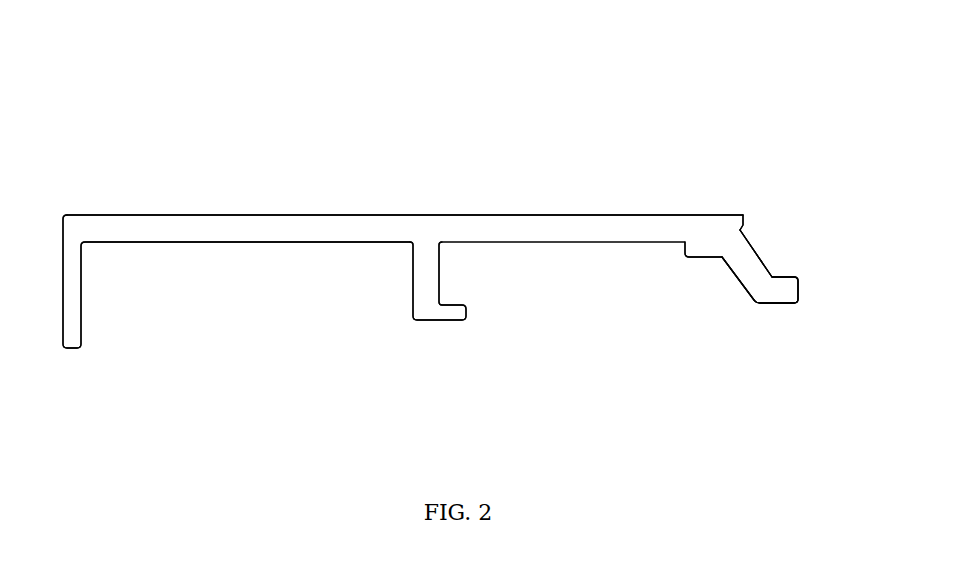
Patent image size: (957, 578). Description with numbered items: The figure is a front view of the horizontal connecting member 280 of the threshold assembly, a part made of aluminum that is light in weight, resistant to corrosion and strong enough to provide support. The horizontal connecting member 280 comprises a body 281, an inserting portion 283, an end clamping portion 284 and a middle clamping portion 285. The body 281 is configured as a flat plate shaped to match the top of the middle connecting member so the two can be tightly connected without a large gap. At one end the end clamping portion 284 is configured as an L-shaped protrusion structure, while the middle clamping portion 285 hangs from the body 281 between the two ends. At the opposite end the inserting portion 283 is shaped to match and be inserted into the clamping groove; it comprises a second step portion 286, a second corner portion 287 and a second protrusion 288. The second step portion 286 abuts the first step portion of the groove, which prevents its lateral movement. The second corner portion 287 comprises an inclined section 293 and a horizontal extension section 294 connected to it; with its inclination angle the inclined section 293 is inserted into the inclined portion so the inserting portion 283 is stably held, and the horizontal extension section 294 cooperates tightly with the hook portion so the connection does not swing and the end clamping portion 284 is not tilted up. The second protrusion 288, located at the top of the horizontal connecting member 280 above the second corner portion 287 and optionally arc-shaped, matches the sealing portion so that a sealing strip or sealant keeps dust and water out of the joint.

The horizontal connecting member 280 is at (219, 67).
The body 281 is at (485, 226).
The inserting portion 283 is at (753, 297).
The end clamping portion 284 is at (76, 298).
The middle clamping portion 285 is at (428, 287).
The second step portion 286 is at (702, 248).
The second corner portion 287 is at (787, 182).
The second protrusion 288 is at (743, 216).
The inclined section 293 is at (753, 273).
The horizontal extension section 294 is at (787, 293).